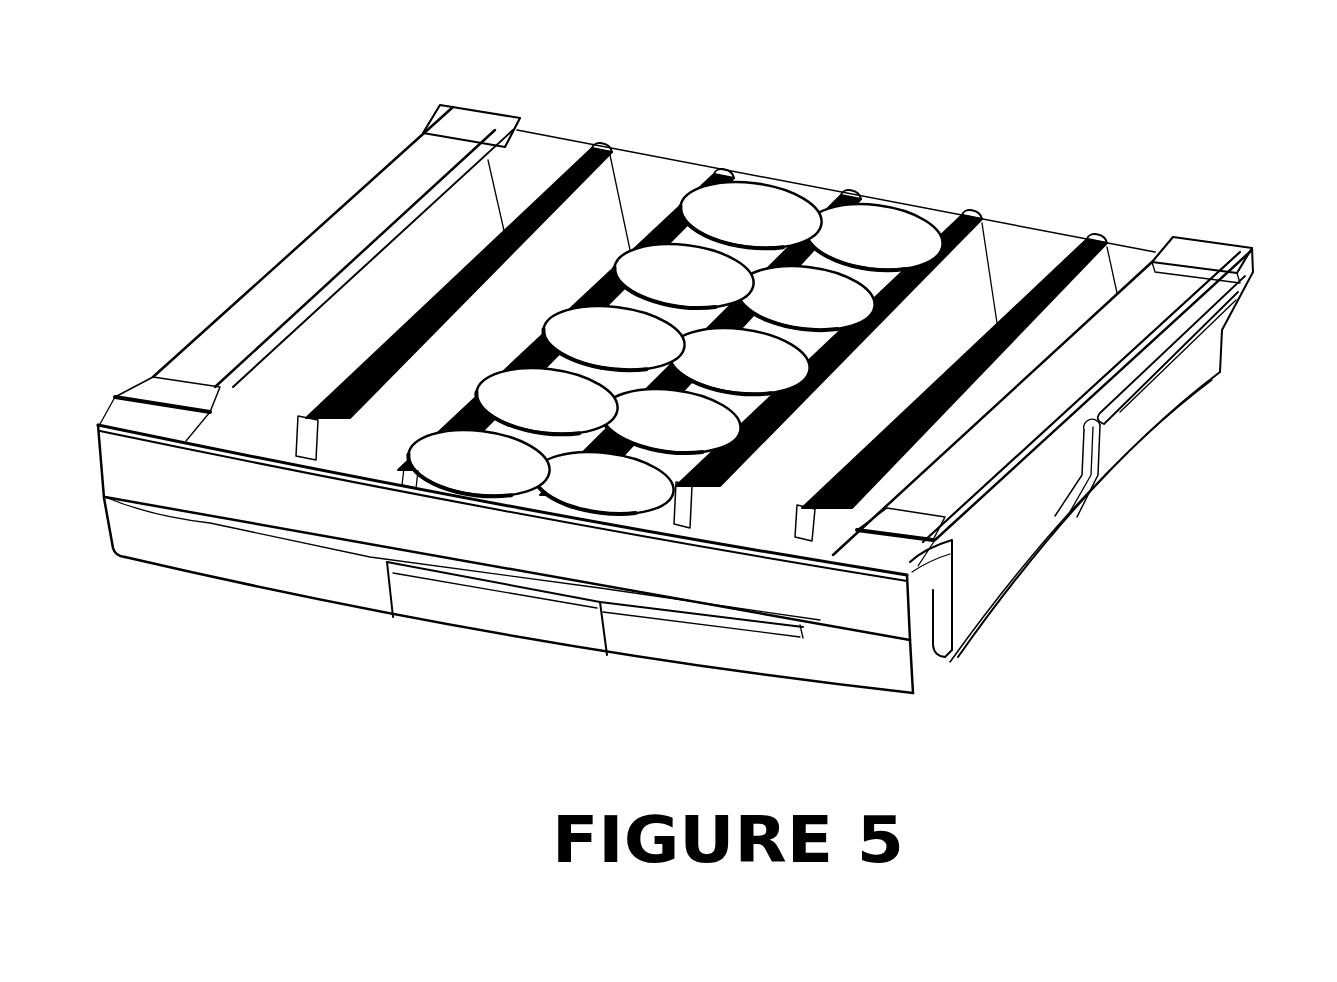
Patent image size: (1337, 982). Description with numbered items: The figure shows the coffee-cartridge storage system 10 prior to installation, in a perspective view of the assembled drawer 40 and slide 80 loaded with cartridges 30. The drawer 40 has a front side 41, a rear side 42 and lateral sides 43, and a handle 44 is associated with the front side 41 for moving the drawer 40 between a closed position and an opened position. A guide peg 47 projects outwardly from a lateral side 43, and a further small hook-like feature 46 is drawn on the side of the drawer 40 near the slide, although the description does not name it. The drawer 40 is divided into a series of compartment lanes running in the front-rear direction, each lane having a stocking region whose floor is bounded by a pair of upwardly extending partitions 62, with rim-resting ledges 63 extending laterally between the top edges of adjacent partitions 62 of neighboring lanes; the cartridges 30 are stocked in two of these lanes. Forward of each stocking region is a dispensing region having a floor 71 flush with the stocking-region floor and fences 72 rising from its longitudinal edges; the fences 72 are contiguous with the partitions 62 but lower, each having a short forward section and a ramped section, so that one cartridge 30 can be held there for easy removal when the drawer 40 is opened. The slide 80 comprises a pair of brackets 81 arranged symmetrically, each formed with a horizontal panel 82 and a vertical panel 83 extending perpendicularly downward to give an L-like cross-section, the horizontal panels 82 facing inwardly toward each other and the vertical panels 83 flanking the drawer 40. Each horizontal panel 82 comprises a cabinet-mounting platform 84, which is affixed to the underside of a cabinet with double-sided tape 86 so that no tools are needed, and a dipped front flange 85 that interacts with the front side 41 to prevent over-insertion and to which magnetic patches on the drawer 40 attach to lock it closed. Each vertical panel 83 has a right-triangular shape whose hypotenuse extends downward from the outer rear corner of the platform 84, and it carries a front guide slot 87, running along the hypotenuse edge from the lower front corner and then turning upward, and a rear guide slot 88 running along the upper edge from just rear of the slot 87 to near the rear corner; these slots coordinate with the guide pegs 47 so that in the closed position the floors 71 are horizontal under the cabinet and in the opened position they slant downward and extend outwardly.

The coffee-cartridge storage system 10 is at (300, 197).
The cartridge 30 is at (676, 348).
The drawer 40 is at (905, 688).
The front side 41 is at (507, 568).
The rear side 42 is at (802, 239).
The lateral sides 43 is at (1105, 464).
The handle 44 is at (595, 608).
The retaining hook 46 is at (1100, 425).
The guide peg 47 is at (1258, 284).
The partition 62 is at (706, 328).
The rim-resting ledge 63 is at (600, 146).
The floor 71 is at (802, 512).
The fence 72 is at (300, 440).
The slide 80 is at (446, 104).
The bracket 81 is at (478, 100).
The horizontal panel 82 is at (148, 382).
The vertical panel 83 is at (1140, 410).
The cabinet-mounting platform 84 is at (837, 194).
The dipped front flange 85 is at (522, 471).
The double-sided tape 86 is at (702, 331).
The front guide slot 87 is at (1060, 533).
The rear guide slot 88 is at (1233, 302).